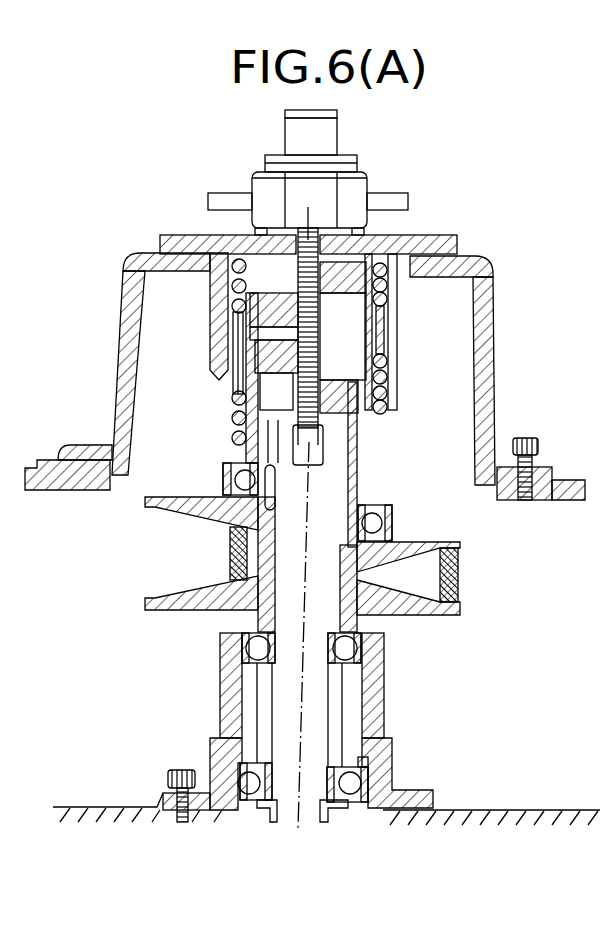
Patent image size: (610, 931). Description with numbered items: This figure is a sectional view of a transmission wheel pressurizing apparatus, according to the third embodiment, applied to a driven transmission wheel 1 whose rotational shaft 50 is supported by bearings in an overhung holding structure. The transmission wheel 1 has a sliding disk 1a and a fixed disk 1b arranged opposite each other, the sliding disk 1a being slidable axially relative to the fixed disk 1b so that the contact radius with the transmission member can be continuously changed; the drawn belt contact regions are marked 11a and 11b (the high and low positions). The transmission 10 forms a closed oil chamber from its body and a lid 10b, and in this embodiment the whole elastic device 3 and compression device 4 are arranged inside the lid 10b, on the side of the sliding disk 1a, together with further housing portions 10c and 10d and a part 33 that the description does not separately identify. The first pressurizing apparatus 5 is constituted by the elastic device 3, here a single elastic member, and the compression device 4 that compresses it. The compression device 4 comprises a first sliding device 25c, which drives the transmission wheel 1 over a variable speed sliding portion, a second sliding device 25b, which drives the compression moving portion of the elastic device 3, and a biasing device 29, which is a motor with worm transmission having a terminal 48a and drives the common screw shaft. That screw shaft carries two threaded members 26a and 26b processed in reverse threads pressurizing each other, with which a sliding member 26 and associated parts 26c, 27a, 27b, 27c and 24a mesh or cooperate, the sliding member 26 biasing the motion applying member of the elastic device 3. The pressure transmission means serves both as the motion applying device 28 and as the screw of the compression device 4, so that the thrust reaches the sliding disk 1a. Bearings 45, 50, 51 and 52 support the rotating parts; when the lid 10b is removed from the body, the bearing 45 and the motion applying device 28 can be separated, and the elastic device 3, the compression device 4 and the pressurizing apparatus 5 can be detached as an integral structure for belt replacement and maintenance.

The driven transmission wheel 1 is at (137, 554).
The sliding disk 1a is at (160, 503).
The fixed disk 1b is at (162, 604).
The elastic device 3 is at (383, 401).
The compression device 4 is at (293, 288).
The first pressurizing apparatus 5 is at (237, 180).
The transmission 10 is at (535, 495).
The lid 10b is at (490, 395).
The housing top plate 10c is at (250, 234).
The housing inner wall 10d is at (220, 348).
The high speed belt contact portion 11a is at (230, 556).
The low speed belt contact portion 11b is at (460, 566).
The spring seat 24a is at (388, 398).
The second sliding device 25b is at (388, 298).
The first sliding device 25c is at (232, 412).
The sliding member 26 is at (308, 337).
The threaded member 26a is at (240, 238).
The threaded member 26b is at (235, 440).
The nut flange 26c is at (375, 236).
The guide rod 27a is at (232, 298).
The guide sleeve 27b is at (222, 375).
The guide sleeve 27c is at (390, 375).
The motion applying device 28 is at (360, 468).
The biasing device 29 is at (355, 185).
The stopper 33 is at (455, 282).
The bearing 45 is at (378, 525).
The motor terminal 48a is at (400, 200).
The rotational shaft 50 is at (358, 636).
The bearing 51 is at (352, 650).
The bearing 52 is at (355, 783).